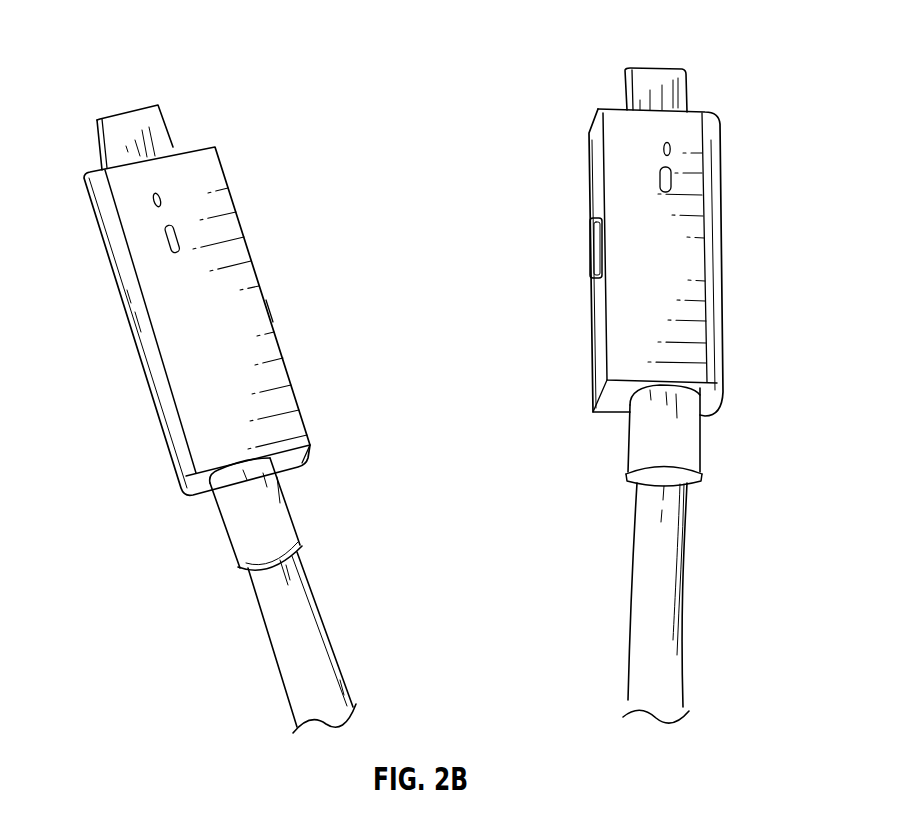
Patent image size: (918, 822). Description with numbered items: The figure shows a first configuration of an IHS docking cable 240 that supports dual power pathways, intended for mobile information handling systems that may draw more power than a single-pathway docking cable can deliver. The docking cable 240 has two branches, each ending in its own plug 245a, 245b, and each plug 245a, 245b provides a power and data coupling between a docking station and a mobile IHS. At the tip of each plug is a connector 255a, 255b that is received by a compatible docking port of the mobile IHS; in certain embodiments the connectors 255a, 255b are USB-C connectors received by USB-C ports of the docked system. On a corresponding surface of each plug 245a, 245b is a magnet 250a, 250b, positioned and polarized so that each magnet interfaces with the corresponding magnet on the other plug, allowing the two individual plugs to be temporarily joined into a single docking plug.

The docking cable 240 is at (268, 597).
The plug 245a is at (177, 350).
The plug 245b is at (695, 268).
The magnet 250a is at (268, 307).
The magnet 250b is at (589, 250).
The connector 255a is at (130, 109).
The connector 255b is at (657, 70).